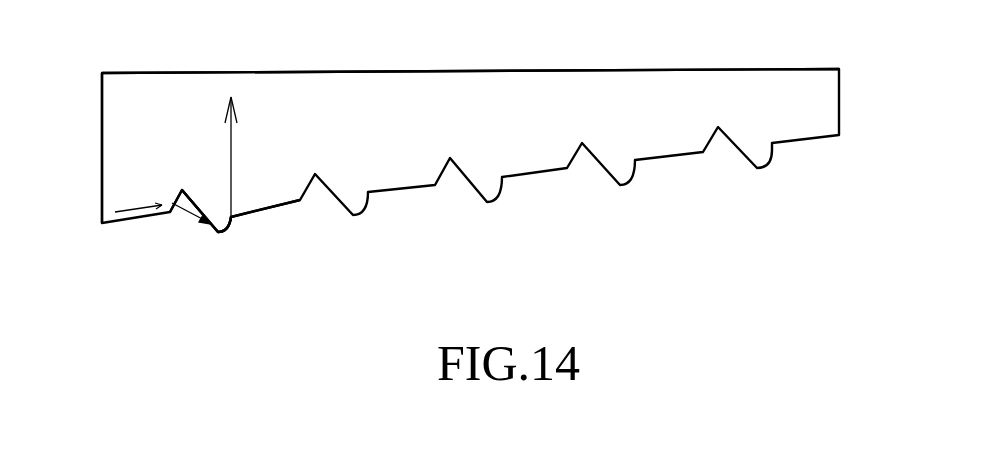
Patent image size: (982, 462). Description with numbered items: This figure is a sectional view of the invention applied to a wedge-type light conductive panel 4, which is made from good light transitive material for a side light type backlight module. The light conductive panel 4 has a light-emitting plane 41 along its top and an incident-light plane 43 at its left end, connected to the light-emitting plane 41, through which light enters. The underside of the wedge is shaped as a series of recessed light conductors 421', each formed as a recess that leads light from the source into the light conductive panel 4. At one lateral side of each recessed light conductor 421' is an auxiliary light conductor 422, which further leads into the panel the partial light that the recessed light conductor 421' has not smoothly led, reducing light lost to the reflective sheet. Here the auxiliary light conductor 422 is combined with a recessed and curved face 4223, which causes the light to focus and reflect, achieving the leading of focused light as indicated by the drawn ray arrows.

The light conductive panel 4 is at (818, 40).
The light-emitting plane 41 is at (700, 68).
The incident-light plane 43 is at (101, 127).
The recessed light conductor 421' is at (159, 231).
The auxiliary light conductor 422 is at (235, 232).
The recessed and curved face 4223 is at (233, 218).